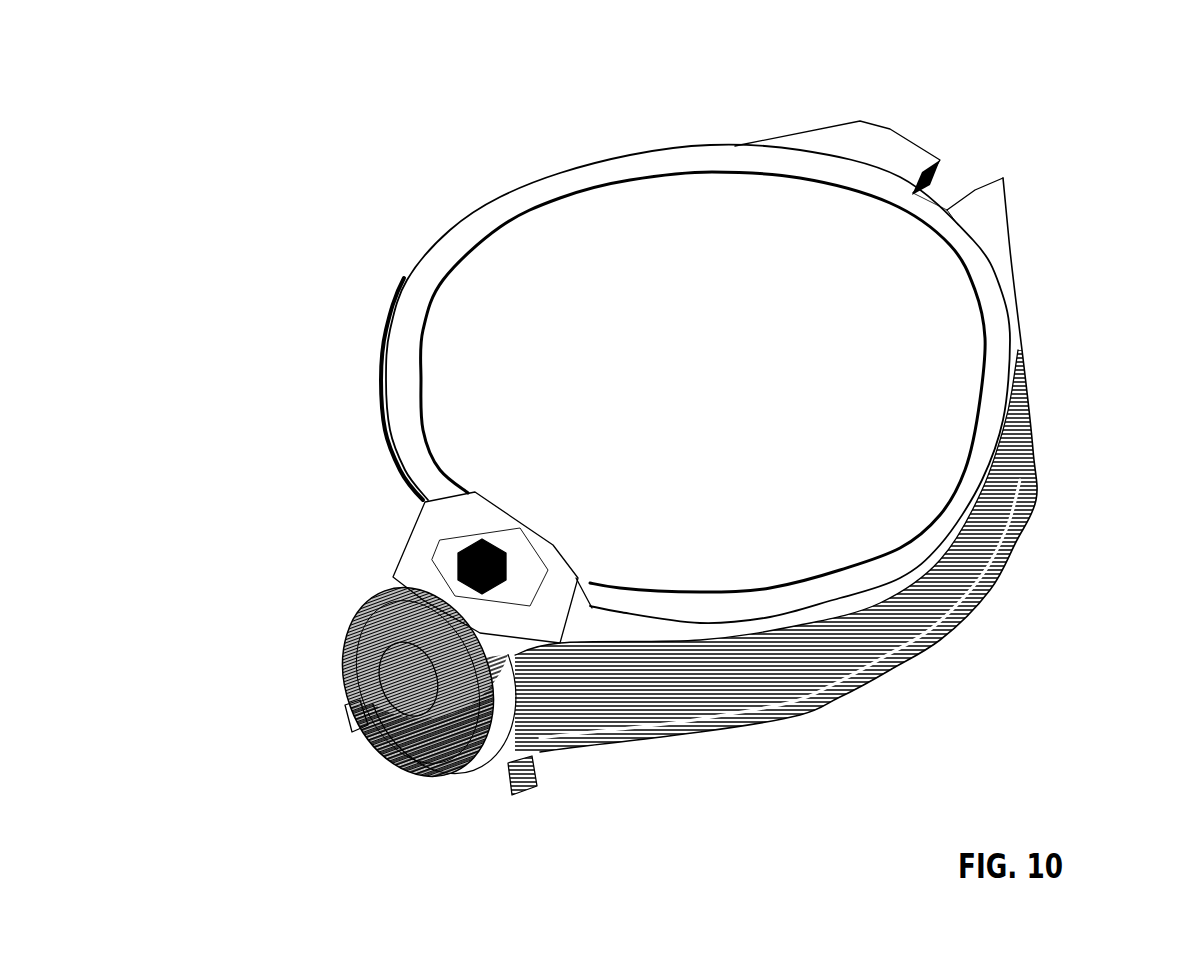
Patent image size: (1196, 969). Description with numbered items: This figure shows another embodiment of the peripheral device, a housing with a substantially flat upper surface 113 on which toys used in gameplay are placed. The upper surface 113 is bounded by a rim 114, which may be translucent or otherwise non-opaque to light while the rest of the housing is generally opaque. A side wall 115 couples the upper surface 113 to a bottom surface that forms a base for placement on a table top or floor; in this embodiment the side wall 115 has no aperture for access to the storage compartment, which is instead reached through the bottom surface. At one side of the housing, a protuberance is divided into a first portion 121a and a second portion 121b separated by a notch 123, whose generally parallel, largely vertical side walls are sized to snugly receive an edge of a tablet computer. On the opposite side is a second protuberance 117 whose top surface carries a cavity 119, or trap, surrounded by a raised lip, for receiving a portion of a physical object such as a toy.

The upper surface 113 is at (567, 266).
The rim 114 is at (412, 313).
The side wall 115 is at (997, 522).
The second protuberance 117 is at (343, 630).
The cavity 119 is at (450, 561).
The first portion 121a is at (880, 127).
The second portion 121b is at (1005, 190).
The notch 123 is at (970, 146).